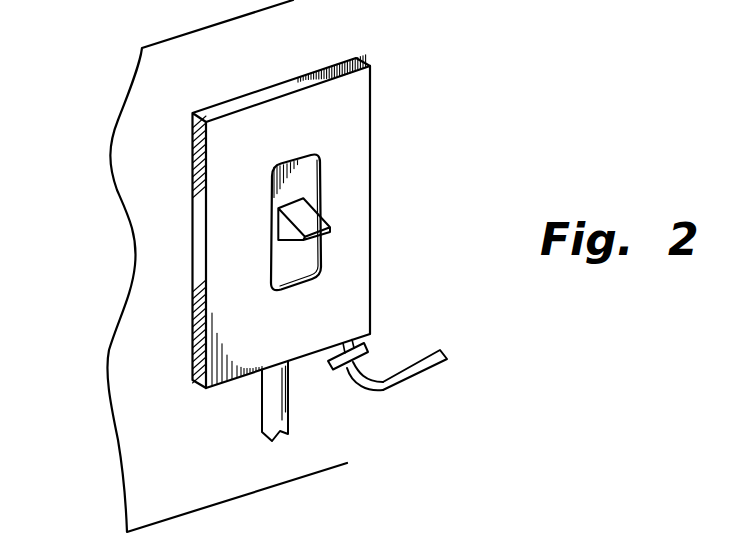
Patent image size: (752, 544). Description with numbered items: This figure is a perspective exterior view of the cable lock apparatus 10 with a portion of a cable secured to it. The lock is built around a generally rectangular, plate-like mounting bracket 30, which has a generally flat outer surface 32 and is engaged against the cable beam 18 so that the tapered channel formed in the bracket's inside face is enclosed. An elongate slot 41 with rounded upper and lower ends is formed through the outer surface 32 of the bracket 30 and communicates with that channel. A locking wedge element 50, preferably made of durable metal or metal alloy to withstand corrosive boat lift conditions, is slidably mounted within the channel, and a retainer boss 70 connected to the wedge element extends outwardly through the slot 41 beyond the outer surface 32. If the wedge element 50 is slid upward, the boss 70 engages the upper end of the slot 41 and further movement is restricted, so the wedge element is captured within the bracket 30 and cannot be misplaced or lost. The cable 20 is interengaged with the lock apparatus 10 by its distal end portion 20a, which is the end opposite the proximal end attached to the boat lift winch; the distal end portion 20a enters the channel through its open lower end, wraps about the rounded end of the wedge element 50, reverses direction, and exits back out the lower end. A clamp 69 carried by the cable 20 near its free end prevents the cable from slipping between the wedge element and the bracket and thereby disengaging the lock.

The cable lock apparatus 10 is at (372, 225).
The cable beam 18 is at (155, 342).
The cable 20 is at (416, 417).
The distal end portion of cable 20a is at (354, 377).
The mounting bracket 30 is at (370, 276).
The outer surface of bracket 32 is at (353, 312).
The elongate slot 41 is at (323, 176).
The locking wedge element 50 is at (300, 176).
The clamp 69 is at (328, 368).
The retainer boss 70 is at (328, 234).